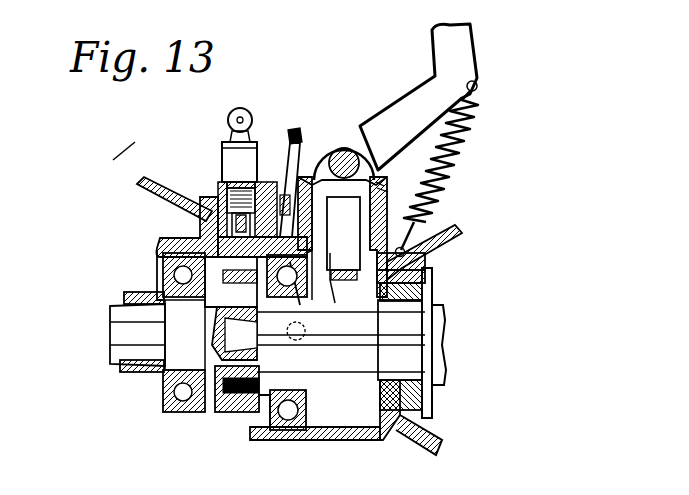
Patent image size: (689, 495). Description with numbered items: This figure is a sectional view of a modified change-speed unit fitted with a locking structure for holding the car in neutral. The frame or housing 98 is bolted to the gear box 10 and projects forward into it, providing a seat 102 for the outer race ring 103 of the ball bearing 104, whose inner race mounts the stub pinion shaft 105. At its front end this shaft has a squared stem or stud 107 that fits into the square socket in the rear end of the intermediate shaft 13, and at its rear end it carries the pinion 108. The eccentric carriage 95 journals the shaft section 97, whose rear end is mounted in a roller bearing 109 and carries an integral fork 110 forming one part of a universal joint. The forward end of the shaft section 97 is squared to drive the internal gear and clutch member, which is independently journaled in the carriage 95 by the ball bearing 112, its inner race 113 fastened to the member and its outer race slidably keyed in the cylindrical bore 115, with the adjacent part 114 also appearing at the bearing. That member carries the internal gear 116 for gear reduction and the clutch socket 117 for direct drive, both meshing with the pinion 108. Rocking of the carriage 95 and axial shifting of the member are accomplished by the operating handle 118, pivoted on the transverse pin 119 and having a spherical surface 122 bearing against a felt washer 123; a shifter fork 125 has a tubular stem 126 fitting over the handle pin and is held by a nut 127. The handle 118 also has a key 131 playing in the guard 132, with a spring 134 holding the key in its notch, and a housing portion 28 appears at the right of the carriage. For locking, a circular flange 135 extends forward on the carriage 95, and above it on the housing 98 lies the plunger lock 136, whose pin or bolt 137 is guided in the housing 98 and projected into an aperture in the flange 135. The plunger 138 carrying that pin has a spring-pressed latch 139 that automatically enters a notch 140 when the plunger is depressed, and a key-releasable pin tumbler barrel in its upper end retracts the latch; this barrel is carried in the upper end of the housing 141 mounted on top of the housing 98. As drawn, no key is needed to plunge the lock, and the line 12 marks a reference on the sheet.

The gear box 10 is at (153, 185).
The direction arrow 12 is at (127, 144).
The intermediate shaft 13 is at (126, 372).
The housing flange 28 is at (458, 240).
The eccentric carriage 95 is at (400, 438).
The shaft section 97 is at (358, 352).
The frame or housing 98 is at (216, 236).
The seat 102 is at (160, 245).
The outer race ring 103 is at (157, 257).
The ball bearing 104 is at (163, 268).
The stub pinion shaft 105 is at (178, 316).
The squared stem or stud 107 is at (110, 338).
The pinion 108 is at (172, 386).
The roller bearing 109 is at (432, 290).
The fork 110 is at (440, 337).
The ball bearing 112 is at (296, 440).
The inner race 113 is at (330, 440).
The ball bearing 114 is at (278, 432).
The cylindrical bore 115 is at (262, 428).
The internal gear 116 is at (222, 408).
The clutch socket 117 is at (240, 398).
The operating handle 118 is at (466, 60).
The transverse pin 119 is at (344, 150).
The spherical surface 122 is at (386, 180).
The felt washer 123 is at (390, 190).
The shifter fork 125 is at (355, 297).
The tubular stem 126 is at (418, 230).
The nut 127 is at (432, 272).
The key 131 is at (318, 152).
The guard 132 is at (290, 128).
The spring 134 is at (470, 141).
The circular flange 135 is at (231, 308).
The plunger lock 136 is at (234, 100).
The pin or bolt 137 is at (228, 212).
The plunger 138 is at (233, 178).
The laterally projectible bolt or latch 139 is at (228, 182).
The notch 140 is at (230, 200).
The housing 141 is at (250, 152).